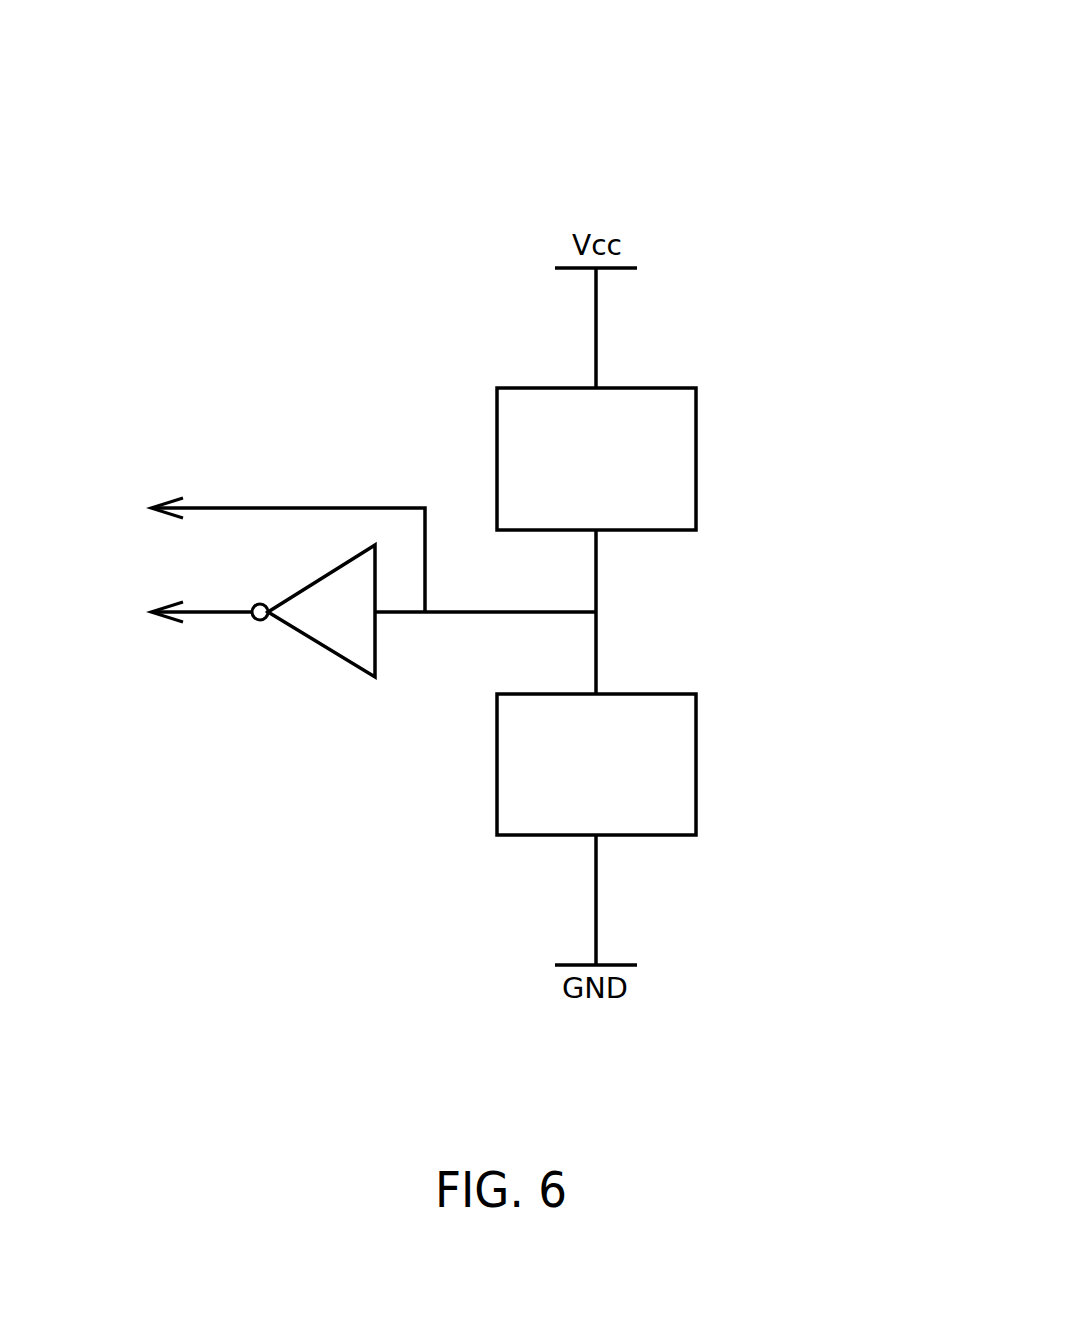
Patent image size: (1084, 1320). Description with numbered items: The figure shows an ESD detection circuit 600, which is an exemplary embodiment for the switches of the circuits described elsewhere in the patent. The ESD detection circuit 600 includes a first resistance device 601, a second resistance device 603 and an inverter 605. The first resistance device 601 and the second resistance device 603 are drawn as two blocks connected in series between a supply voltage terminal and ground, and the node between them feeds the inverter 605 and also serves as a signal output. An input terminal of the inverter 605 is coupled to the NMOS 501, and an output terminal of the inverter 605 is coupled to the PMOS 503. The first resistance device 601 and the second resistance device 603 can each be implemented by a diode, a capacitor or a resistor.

The ESD detection circuit 600 is at (717, 152).
The first resistance device 601 is at (697, 460).
The second resistance device 603 is at (697, 765).
The inverter 605 is at (320, 650).
The NMOS 501 is at (259, 550).
The PMOS 503 is at (172, 611).